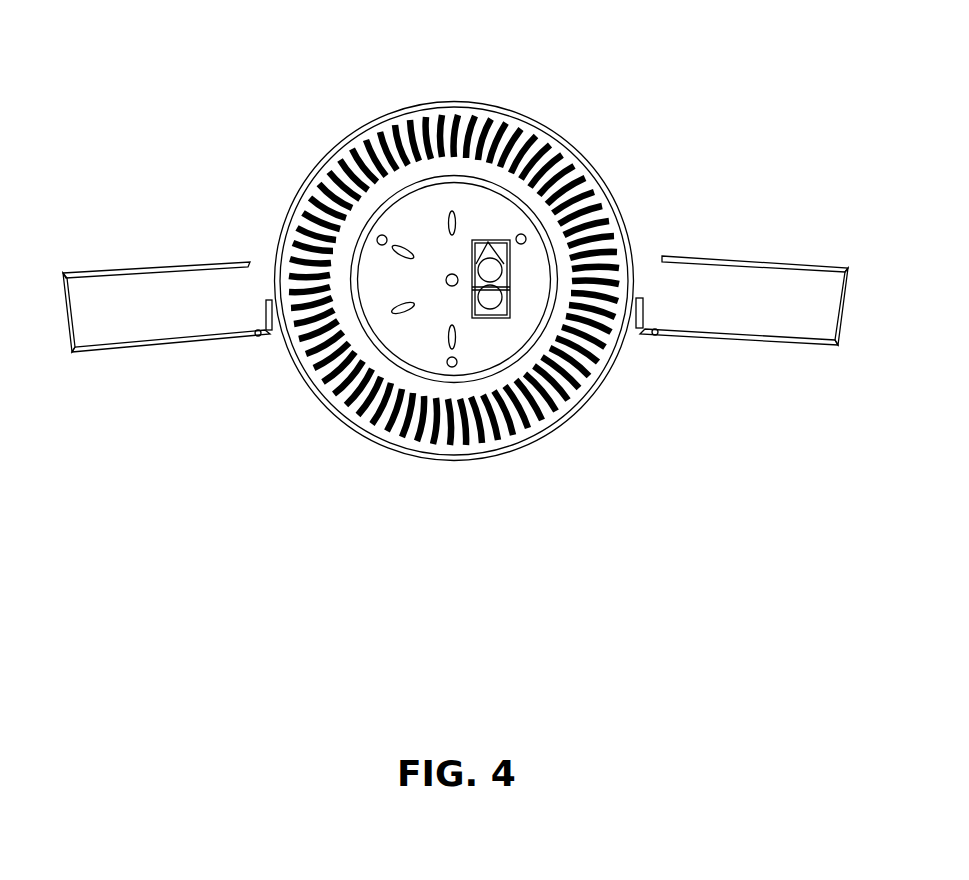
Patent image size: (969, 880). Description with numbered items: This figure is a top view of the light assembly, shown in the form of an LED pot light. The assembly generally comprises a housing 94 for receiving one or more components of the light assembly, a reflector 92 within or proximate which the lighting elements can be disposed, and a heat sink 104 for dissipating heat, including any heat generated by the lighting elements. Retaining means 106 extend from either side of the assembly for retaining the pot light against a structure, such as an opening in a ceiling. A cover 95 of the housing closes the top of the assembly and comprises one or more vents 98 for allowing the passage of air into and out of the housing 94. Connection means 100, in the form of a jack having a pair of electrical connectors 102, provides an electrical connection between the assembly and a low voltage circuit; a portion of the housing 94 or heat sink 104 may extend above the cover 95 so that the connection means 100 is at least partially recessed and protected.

The reflector 92 is at (452, 104).
The housing 94 is at (367, 205).
The cover 95 is at (407, 353).
The vents 98 is at (393, 312).
The connection means 100 is at (530, 212).
The electrical connectors 102 is at (490, 270).
The heat sink 104 is at (505, 240).
The retaining means 106 is at (85, 273).